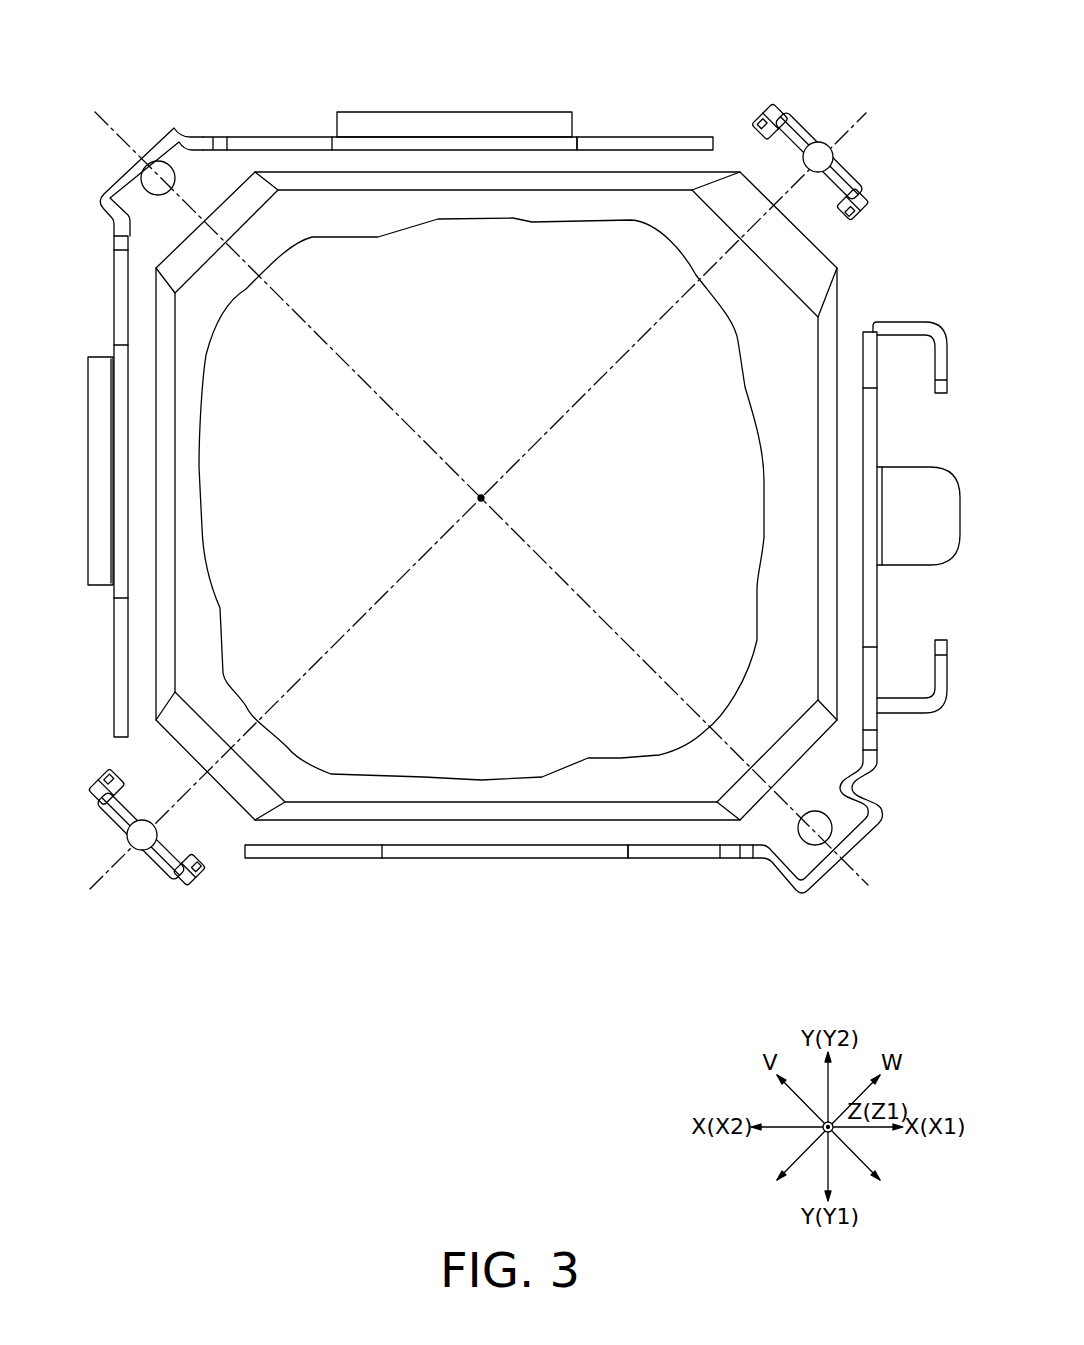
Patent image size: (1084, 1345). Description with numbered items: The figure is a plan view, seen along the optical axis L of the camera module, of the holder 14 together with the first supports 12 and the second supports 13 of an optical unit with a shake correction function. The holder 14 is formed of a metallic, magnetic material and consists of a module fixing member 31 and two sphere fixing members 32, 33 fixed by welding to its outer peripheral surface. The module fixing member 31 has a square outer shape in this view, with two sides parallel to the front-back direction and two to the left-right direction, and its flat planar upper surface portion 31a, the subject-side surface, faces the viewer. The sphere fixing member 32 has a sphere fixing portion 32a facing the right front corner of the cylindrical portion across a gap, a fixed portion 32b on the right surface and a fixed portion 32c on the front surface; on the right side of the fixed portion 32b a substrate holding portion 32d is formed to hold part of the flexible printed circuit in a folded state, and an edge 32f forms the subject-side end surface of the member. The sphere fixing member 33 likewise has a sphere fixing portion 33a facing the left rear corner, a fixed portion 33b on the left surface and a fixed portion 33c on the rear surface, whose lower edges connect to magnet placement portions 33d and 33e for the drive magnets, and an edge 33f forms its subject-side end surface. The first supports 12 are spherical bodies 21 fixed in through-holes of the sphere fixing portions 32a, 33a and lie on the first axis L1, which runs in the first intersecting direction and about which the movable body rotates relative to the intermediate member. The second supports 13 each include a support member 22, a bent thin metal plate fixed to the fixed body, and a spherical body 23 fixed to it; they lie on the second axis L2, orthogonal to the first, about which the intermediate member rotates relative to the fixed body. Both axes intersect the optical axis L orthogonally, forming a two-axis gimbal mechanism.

The first support 12 is at (158, 196).
The second support 13 is at (815, 83).
The holder 14 is at (670, 73).
The spherical body 21 is at (486, 503).
The support member 22 is at (847, 158).
The spherical body 23 is at (820, 173).
The module fixing member 31 is at (345, 822).
The upper surface portion 31a is at (617, 757).
The sphere fixing member 32 is at (602, 597).
The sphere fixing portion 32a is at (834, 880).
The fixed portion 32b is at (878, 610).
The fixed portion 32c is at (493, 860).
The substrate holding portion 32d is at (905, 322).
The edge 32f is at (600, 860).
The sphere fixing member 33 is at (376, 396).
The sphere fixing portion 33a is at (150, 135).
The fixed portion 33b is at (113, 657).
The fixed portion 33c is at (273, 137).
The magnet placement portion 33d is at (100, 357).
The magnet placement portion 33e is at (452, 112).
The edge 33f is at (610, 137).
The optical axis L is at (480, 495).
The first axis L1 is at (614, 629).
The second axis L2 is at (612, 360).